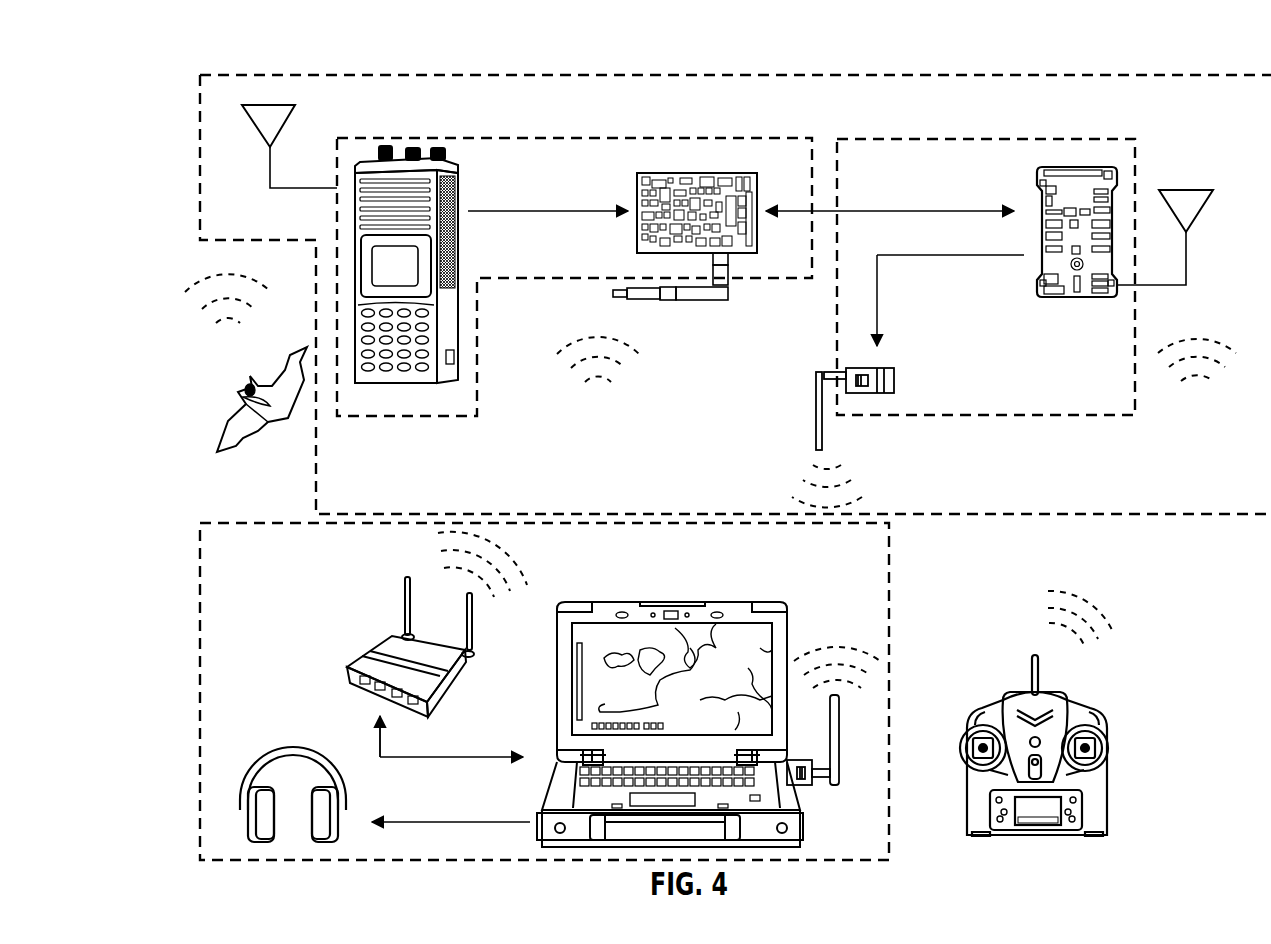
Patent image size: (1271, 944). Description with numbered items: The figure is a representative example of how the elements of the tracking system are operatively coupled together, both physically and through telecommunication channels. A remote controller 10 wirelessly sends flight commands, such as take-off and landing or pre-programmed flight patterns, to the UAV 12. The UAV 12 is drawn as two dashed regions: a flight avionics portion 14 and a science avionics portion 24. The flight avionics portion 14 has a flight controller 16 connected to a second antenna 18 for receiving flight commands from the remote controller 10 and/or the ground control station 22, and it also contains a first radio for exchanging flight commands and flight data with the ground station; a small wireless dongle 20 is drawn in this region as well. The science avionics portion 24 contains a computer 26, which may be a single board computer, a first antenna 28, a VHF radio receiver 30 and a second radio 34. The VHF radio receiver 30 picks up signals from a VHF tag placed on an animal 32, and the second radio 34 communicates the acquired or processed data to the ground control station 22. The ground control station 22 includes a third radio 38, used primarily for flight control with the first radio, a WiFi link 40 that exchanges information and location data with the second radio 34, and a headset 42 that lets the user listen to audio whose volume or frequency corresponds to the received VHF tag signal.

The remote controller 10 is at (1107, 790).
The UAV 12 is at (253, 75).
The flight avionics portion 14 is at (1080, 139).
The flight controller 16 is at (1114, 228).
The second antenna 18 is at (1200, 211).
The wireless dongle 20 is at (894, 381).
The ground control station 22 is at (889, 580).
The science avionics portion 24 is at (756, 139).
The computer 26 is at (748, 251).
The first antenna 28 is at (243, 122).
The VHF radio receiver 30 is at (458, 230).
The animal 32 is at (226, 432).
The second radio 34 is at (712, 298).
The third radio 38 is at (845, 760).
The WiFi link 40 is at (375, 652).
The headset 42 is at (242, 797).